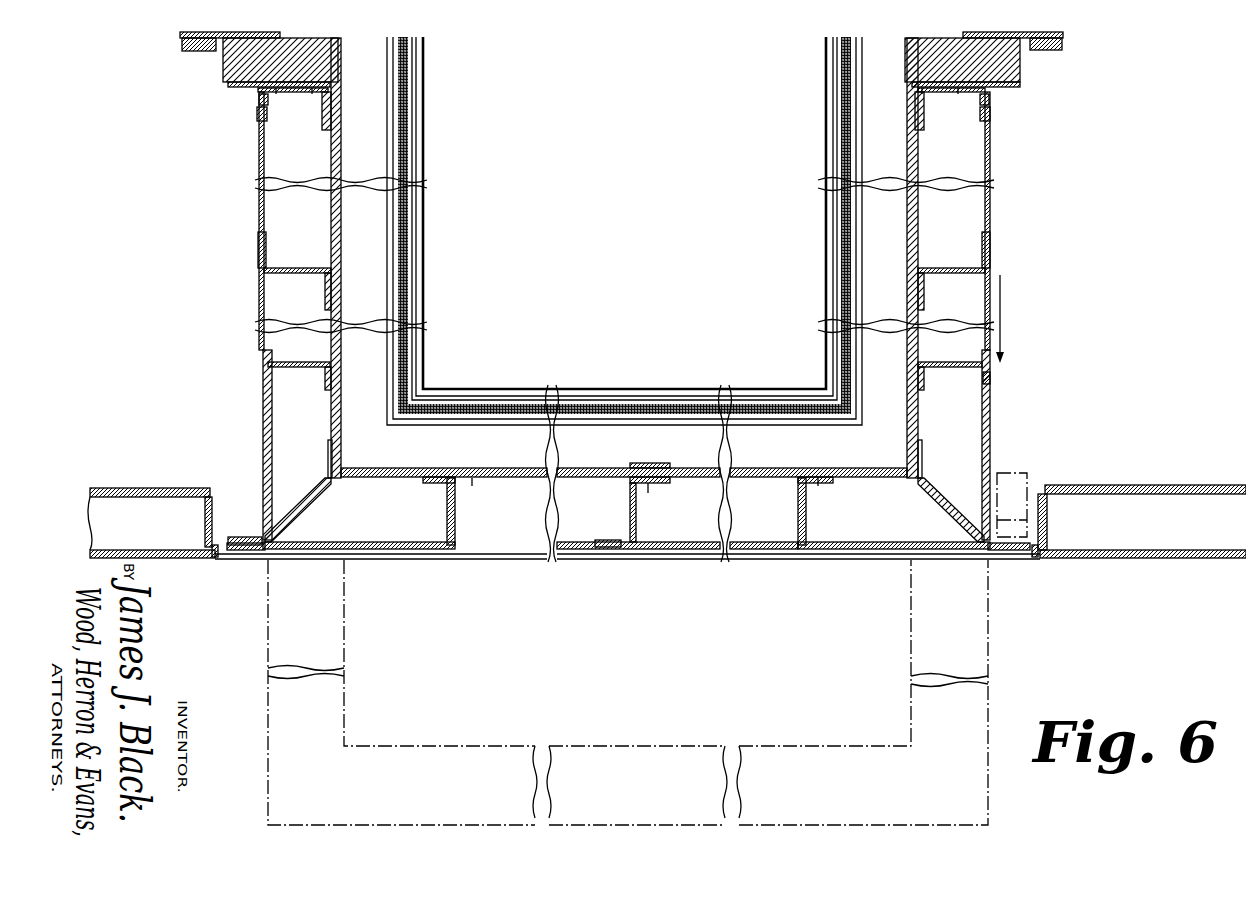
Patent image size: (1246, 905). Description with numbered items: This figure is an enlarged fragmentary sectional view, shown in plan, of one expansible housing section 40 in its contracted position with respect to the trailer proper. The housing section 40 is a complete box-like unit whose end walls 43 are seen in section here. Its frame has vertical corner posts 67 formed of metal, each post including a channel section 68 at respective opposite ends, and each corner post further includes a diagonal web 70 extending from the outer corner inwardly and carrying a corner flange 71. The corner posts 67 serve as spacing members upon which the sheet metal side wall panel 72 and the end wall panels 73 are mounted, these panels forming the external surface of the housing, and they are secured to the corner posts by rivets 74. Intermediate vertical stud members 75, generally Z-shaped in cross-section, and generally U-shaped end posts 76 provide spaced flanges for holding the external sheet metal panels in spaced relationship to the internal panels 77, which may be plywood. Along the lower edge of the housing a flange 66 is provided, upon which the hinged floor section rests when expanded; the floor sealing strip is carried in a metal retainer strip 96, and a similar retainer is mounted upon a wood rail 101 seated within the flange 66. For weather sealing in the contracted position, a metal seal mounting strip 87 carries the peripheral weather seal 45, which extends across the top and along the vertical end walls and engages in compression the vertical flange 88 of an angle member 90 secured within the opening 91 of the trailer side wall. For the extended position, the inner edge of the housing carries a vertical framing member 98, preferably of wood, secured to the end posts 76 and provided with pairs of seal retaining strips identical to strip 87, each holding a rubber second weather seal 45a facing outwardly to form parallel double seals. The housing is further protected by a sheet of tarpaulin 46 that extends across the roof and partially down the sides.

The expansible housing section 40 is at (514, 552).
The end wall 43 is at (254, 285).
The weather seal 45 is at (249, 530).
The second weather seal 45a is at (210, 48).
The tarpaulin sheet 46 is at (400, 552).
The flange 66 is at (425, 130).
The vertical corner post 67 is at (262, 425).
The channel section 68 is at (280, 362).
The diagonal web 70 is at (303, 504).
The corner flange 71 is at (328, 452).
The side wall panel 72 is at (772, 552).
The end wall panel 73 is at (258, 200).
The rivet 74 is at (262, 120).
The intermediate vertical stud member 75 is at (301, 268).
The end post 76 is at (322, 116).
The internal panel 77 is at (341, 242).
The metal seal mounting strip 87 is at (215, 34).
The vertical flange 88 is at (1015, 535).
The angle member 90 is at (208, 515).
The opening 91 is at (215, 550).
The metal retainer strip 96 is at (425, 265).
The vertical framing member 98 is at (240, 70).
The wood rail 101 is at (378, 361).